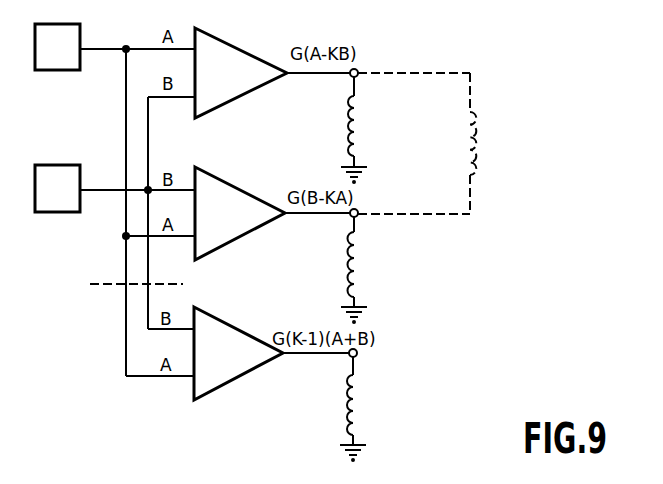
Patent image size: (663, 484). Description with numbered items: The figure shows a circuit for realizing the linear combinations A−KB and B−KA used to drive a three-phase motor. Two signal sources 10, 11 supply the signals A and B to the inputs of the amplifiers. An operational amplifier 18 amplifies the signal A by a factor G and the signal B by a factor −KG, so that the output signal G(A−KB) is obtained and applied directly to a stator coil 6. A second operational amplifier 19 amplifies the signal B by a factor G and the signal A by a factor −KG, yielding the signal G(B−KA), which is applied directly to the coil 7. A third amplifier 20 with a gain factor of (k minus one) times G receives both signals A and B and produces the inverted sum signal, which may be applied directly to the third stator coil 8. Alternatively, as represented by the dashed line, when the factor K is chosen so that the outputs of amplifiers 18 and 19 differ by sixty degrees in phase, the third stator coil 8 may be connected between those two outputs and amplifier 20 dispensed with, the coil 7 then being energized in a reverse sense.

The signal source A 10 is at (52, 23).
The signal source B 11 is at (50, 165).
The operational amplifier 18 is at (243, 34).
The second operational amplifier 19 is at (234, 188).
The third amplifier 20 is at (237, 329).
The stator coil 6 is at (358, 133).
The coil 7 is at (358, 274).
The third stator coil 8 is at (357, 410).